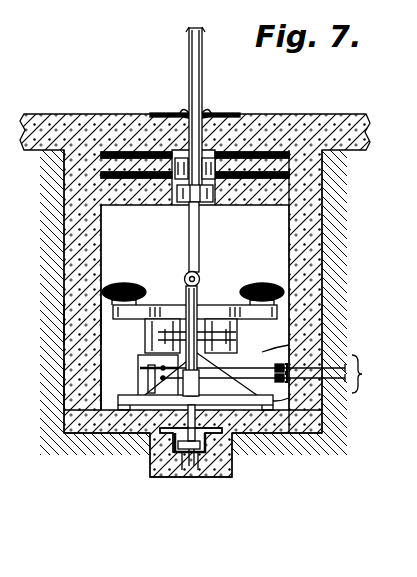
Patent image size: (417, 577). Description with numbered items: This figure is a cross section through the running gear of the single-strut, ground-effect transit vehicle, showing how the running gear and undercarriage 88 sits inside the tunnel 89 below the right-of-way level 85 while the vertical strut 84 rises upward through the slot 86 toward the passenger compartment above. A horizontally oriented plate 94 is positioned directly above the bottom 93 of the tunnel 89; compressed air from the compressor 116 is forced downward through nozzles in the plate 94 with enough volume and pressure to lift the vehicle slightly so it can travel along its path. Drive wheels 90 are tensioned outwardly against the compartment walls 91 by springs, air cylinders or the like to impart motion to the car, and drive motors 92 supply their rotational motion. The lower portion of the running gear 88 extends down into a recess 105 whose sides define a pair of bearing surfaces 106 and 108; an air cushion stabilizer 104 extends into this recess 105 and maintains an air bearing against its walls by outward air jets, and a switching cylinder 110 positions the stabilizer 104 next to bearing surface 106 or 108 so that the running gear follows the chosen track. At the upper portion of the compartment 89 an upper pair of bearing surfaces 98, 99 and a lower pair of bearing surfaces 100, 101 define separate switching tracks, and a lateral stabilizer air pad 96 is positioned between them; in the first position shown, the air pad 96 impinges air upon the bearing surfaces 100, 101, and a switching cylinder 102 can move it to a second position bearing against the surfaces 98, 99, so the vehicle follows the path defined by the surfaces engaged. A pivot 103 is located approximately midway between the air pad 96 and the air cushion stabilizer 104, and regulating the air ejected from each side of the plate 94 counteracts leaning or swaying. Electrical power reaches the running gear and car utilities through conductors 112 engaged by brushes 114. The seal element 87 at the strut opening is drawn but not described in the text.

The strut 84 is at (203, 45).
The right-of-way level 85 is at (341, 114).
The slot 86 is at (240, 152).
The shaft seal 87 is at (185, 111).
The running gear and undercarriage 88 is at (190, 312).
The tunnel 89 is at (101, 322).
The drive wheels 90 is at (132, 283).
The compartment walls 91 is at (90, 226).
The drive motors 92 is at (146, 333).
The bottom 93 is at (112, 398).
The plate 94 is at (262, 406).
The lateral stabilizer air pad 96 is at (166, 156).
The bearing surface 98 is at (283, 114).
The bearing surface 99 is at (181, 157).
The bearing surface 100 is at (215, 193).
The bearing surface 101 is at (176, 201).
The switching cylinder 102 is at (200, 233).
The pivot 103 is at (200, 277).
The air cushion stabilizer 104 is at (181, 471).
The recess 105 is at (199, 471).
The bearing surface 106 is at (232, 448).
The bearing surface 108 is at (168, 438).
The switching cylinder 110 is at (128, 436).
The conductors 112 is at (254, 382).
The brushes 114 is at (263, 357).
The compressor 116 is at (138, 358).